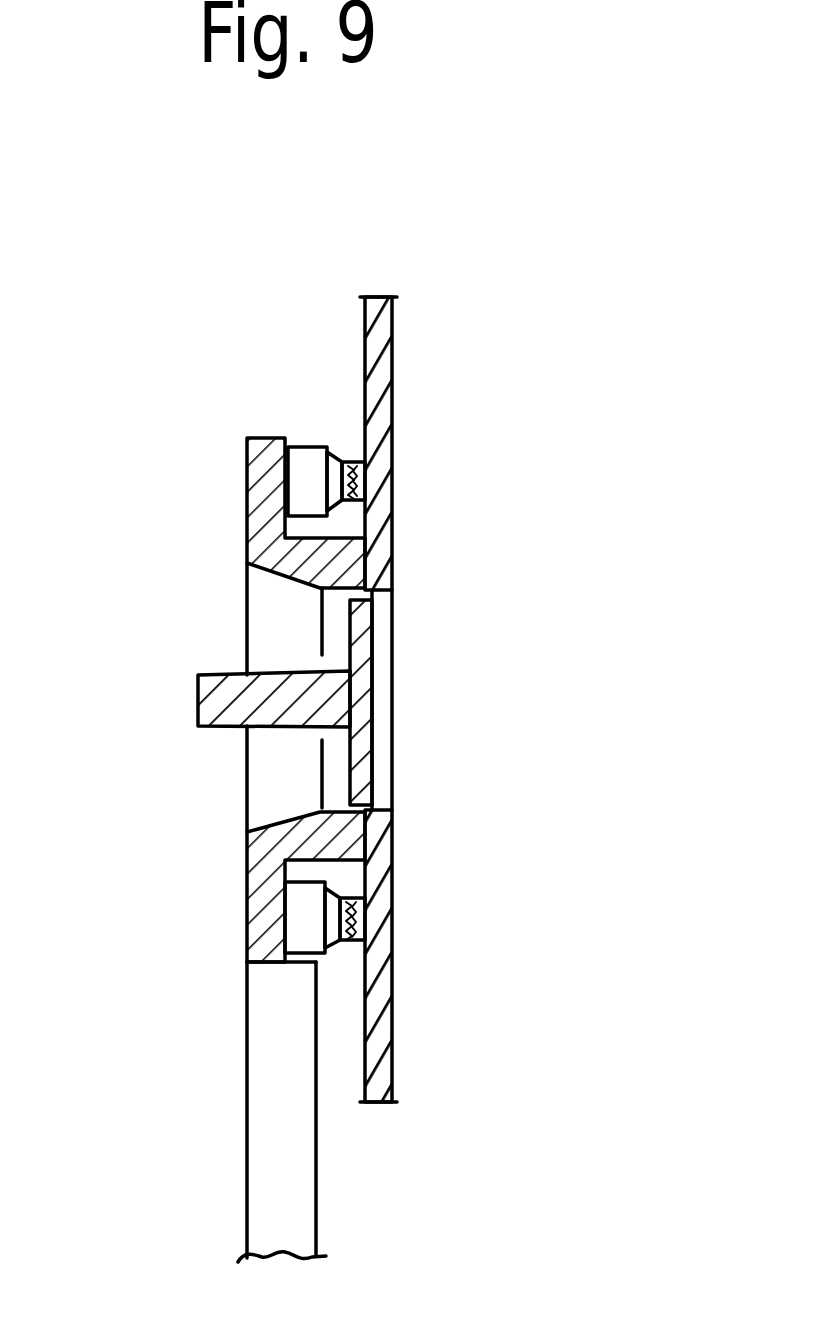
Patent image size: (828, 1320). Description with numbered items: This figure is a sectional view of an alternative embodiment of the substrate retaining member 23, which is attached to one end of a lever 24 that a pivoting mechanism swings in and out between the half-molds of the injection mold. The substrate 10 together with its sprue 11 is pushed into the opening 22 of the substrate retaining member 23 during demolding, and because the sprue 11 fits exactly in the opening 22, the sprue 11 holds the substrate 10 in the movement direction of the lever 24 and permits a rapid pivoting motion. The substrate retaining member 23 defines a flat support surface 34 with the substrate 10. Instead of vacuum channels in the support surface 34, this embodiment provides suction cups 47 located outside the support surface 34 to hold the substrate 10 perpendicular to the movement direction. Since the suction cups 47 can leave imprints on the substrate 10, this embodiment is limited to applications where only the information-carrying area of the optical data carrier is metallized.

The substrate 10 is at (393, 352).
The sprue 11 is at (278, 748).
The opening 22 is at (297, 624).
The substrate retaining member 23 is at (258, 480).
The lever 24 is at (275, 1146).
The support surface 34 is at (370, 833).
The suction cups 47 is at (358, 462).